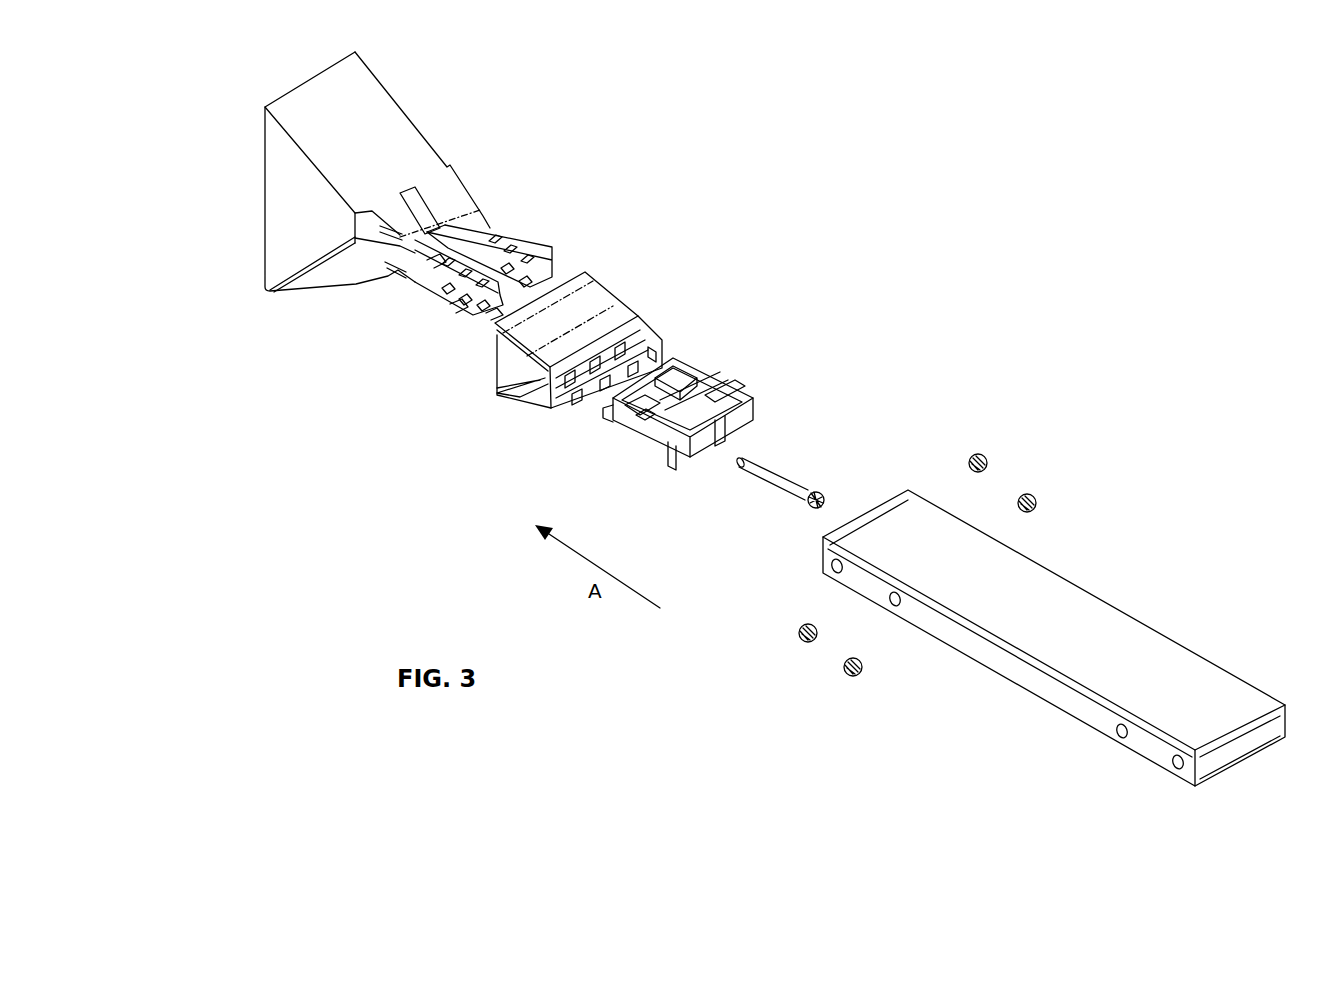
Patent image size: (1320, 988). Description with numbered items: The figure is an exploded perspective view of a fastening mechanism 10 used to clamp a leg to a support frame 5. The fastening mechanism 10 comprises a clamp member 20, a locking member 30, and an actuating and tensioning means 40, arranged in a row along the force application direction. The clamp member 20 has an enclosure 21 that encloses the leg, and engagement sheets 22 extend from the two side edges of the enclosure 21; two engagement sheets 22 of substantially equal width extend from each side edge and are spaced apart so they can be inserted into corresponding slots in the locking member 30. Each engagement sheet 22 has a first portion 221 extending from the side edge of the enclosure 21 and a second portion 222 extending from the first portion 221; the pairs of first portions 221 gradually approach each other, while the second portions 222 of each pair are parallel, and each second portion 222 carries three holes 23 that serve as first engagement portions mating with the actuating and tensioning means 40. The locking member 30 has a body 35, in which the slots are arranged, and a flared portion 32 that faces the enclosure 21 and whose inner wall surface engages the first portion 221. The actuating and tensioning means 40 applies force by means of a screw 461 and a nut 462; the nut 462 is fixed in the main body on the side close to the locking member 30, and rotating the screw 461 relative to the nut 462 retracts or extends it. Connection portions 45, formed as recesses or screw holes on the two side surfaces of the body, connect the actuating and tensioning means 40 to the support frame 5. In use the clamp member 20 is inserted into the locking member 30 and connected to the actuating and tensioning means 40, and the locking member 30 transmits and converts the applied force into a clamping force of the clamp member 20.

The fastening mechanism 10 is at (805, 212).
The clamp member 20 is at (367, 89).
The enclosure 21 is at (395, 137).
The engagement sheet 22 is at (468, 228).
The first portion 221 is at (402, 228).
The second portion 222 is at (435, 258).
The hole 23 is at (513, 242).
The locking member 30 is at (604, 298).
The flared portion 32 is at (545, 330).
The body 35 is at (618, 320).
The actuating and tensioning means 40 is at (705, 369).
The connection portion 45 is at (670, 448).
The screw 461 is at (770, 478).
The nut 462 is at (656, 398).
The support frame 5 is at (985, 607).